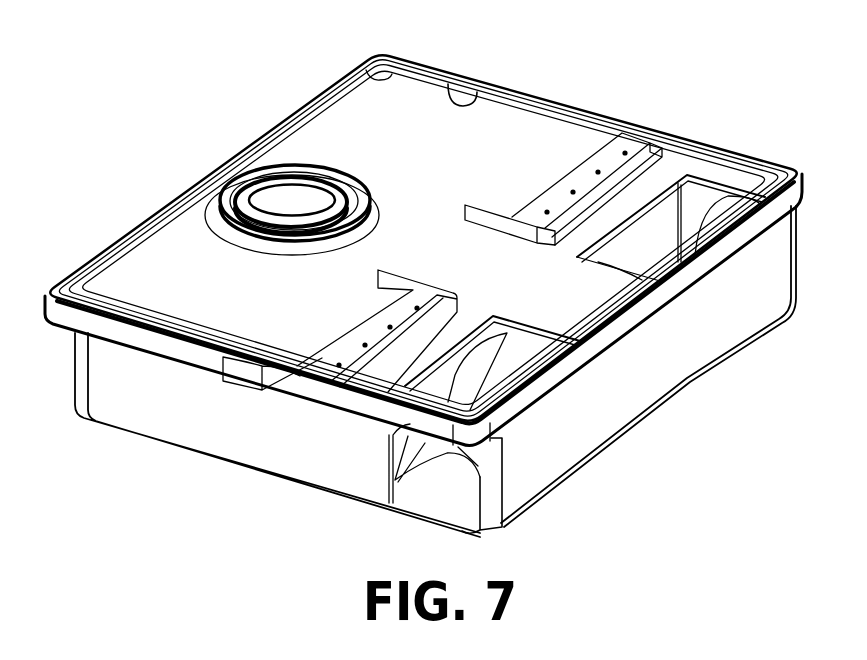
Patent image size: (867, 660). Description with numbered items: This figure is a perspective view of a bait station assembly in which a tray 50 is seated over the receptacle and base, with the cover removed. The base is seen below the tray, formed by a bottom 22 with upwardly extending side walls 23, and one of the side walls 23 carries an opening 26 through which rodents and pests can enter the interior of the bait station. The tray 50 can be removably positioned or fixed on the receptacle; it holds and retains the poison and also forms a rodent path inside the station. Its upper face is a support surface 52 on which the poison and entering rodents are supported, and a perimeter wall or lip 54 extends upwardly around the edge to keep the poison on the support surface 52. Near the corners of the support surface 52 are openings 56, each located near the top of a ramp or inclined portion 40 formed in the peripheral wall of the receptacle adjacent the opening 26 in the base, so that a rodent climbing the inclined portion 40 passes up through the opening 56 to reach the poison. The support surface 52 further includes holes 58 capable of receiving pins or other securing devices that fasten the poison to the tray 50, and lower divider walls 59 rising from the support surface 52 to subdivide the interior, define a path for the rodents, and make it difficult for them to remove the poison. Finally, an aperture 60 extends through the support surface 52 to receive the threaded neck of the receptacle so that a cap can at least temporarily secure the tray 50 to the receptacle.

The bottom 22 is at (438, 500).
The side walls 23 is at (668, 353).
The openings 26 is at (480, 528).
The ramp or inclined portion 40 is at (520, 362).
The tray 50 is at (250, 152).
The support surface 52 is at (340, 127).
The perimeter wall or lip 54 is at (452, 101).
The openings 56 is at (700, 255).
The holes 58 is at (330, 366).
The lower divider walls 59 is at (645, 152).
The aperture 60 is at (215, 222).